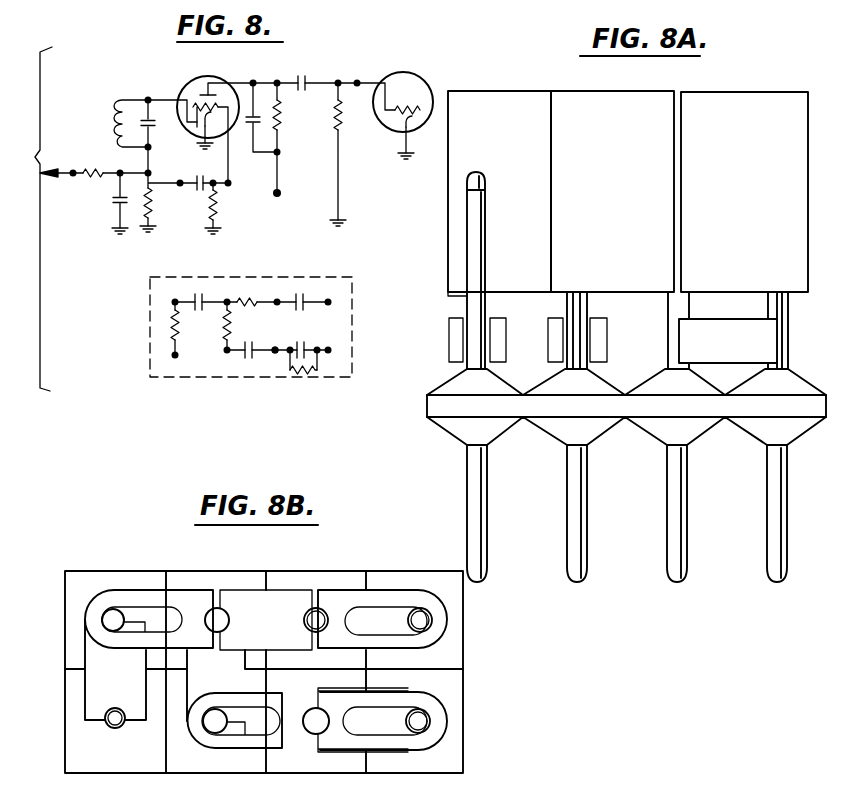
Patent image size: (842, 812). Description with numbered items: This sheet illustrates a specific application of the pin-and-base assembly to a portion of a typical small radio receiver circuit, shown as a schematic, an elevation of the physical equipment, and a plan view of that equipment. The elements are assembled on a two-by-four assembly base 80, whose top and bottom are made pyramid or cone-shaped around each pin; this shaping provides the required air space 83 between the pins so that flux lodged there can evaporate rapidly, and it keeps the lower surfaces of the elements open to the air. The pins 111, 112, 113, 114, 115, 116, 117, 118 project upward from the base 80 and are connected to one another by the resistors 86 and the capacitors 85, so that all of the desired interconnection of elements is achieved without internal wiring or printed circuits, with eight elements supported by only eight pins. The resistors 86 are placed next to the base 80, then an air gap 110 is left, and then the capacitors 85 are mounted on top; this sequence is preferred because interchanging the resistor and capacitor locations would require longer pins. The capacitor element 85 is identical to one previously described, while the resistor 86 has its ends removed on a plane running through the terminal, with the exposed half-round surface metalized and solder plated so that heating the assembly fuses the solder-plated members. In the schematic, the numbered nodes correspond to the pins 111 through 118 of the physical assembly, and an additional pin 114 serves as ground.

In FIG. 8A, the assembly base 80 is at (450, 401).
In FIG. 8A, the air space 83 is at (530, 427).
In FIG. 8, the capacitor element 85 is at (113, 200).
In FIG. 8A, the capacitor element 85 is at (503, 129).
In FIG. 8B, the capacitor element 85 is at (135, 596).
In FIG. 8, the resistor 86 is at (95, 168).
In FIG. 8A, the resistor 86 is at (550, 347).
In FIG. 8B, the resistor 86 is at (277, 629).
In FIG. 8A, the air gap 110 is at (463, 296).
In FIG. 8, the pin 111 is at (62, 170).
In FIG. 8A, the pin 111 is at (485, 228).
In FIG. 8B, the pin 111 is at (116, 729).
In FIG. 8, the pin 112 is at (124, 160).
In FIG. 8B, the pin 112 is at (102, 618).
In FIG. 8, the pin 113 is at (395, 73).
In FIG. 8A, the pin 113 is at (578, 301).
In FIG. 8B, the pin 113 is at (222, 730).
In FIG. 8, the pin 114 is at (113, 230).
In FIG. 8B, the pin 114 is at (218, 612).
In FIG. 8, the pin 115 is at (216, 75).
In FIG. 8A, the pin 115 is at (681, 305).
In FIG. 8B, the pin 115 is at (316, 735).
In FIG. 8, the pin 116 is at (244, 184).
In FIG. 8B, the pin 116 is at (323, 612).
In FIG. 8, the pin 117 is at (280, 197).
In FIG. 8A, the pin 117 is at (787, 322).
In FIG. 8B, the pin 117 is at (416, 733).
In FIG. 8, the pin 118 is at (185, 200).
In FIG. 8B, the pin 118 is at (422, 624).